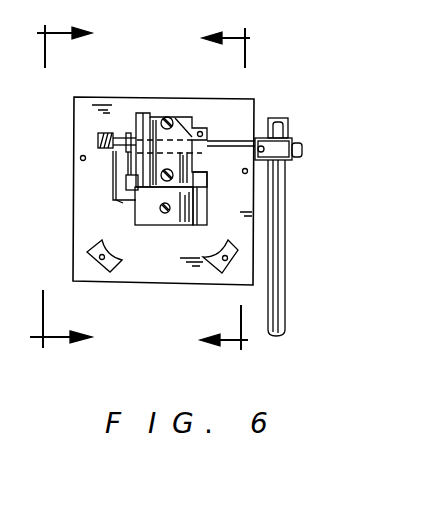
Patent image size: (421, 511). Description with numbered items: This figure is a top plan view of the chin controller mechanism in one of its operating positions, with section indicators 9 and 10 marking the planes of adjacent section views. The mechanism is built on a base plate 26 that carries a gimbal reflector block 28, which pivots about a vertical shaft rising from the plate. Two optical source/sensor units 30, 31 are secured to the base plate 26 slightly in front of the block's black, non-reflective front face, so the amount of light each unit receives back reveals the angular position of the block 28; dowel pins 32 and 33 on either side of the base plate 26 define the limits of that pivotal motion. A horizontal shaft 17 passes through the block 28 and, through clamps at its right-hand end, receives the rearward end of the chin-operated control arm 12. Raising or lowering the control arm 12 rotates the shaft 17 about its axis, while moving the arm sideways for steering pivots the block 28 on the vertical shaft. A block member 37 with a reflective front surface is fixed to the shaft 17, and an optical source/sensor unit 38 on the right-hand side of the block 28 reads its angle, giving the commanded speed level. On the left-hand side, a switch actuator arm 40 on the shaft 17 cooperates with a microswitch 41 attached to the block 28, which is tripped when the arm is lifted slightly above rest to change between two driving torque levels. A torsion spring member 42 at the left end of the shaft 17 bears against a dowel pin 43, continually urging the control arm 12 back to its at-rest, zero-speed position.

The section line 9- 9 is at (215, 190).
The section line 10- 10 is at (77, 188).
The control arm 12 is at (285, 221).
The horizontal shaft 17 is at (214, 143).
The base plate 26 is at (74, 127).
The gimbal reflector block 28 is at (140, 113).
The optical source/sensor unit 30 is at (124, 263).
The optical source/sensor unit 31 is at (213, 250).
The dowel pin 32 is at (80, 160).
The dowel pin 33 is at (243, 173).
The block member 37 is at (207, 135).
The optical source/sensor unit 38 is at (207, 221).
The switch actuator arm 40 is at (124, 161).
The microswitch 41 is at (164, 206).
The torsion spring member 42 is at (118, 185).
The dowel pin 43 is at (123, 203).